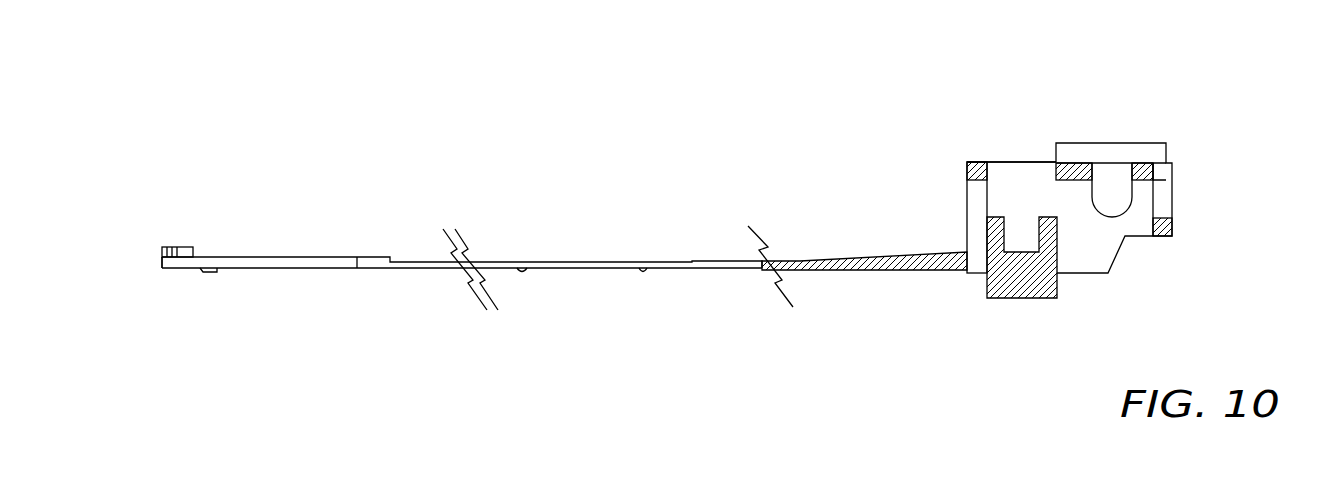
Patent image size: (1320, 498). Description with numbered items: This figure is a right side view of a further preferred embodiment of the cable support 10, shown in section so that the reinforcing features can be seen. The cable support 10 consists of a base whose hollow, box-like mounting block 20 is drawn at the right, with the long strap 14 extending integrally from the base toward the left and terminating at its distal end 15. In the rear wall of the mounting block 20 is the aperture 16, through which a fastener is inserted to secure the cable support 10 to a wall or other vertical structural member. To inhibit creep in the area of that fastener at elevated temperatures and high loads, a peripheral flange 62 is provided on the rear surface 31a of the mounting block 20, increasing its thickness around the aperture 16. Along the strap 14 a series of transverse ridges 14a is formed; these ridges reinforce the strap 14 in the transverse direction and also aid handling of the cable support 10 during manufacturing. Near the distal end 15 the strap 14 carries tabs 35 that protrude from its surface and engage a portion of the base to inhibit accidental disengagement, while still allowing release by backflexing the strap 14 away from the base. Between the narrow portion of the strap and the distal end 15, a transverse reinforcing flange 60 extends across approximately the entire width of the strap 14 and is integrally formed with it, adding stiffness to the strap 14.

The cable support 10 is at (855, 343).
The strap 14 is at (278, 257).
The transverse ridges 14a is at (525, 270).
The distal end 15 is at (163, 265).
The aperture 16 is at (1117, 186).
The mounting block 20 is at (943, 207).
The rear surface 31a is at (1025, 162).
The tabs 35 is at (179, 247).
The transverse reinforcing flange 60 is at (205, 272).
The peripheral flange 62 is at (1153, 153).